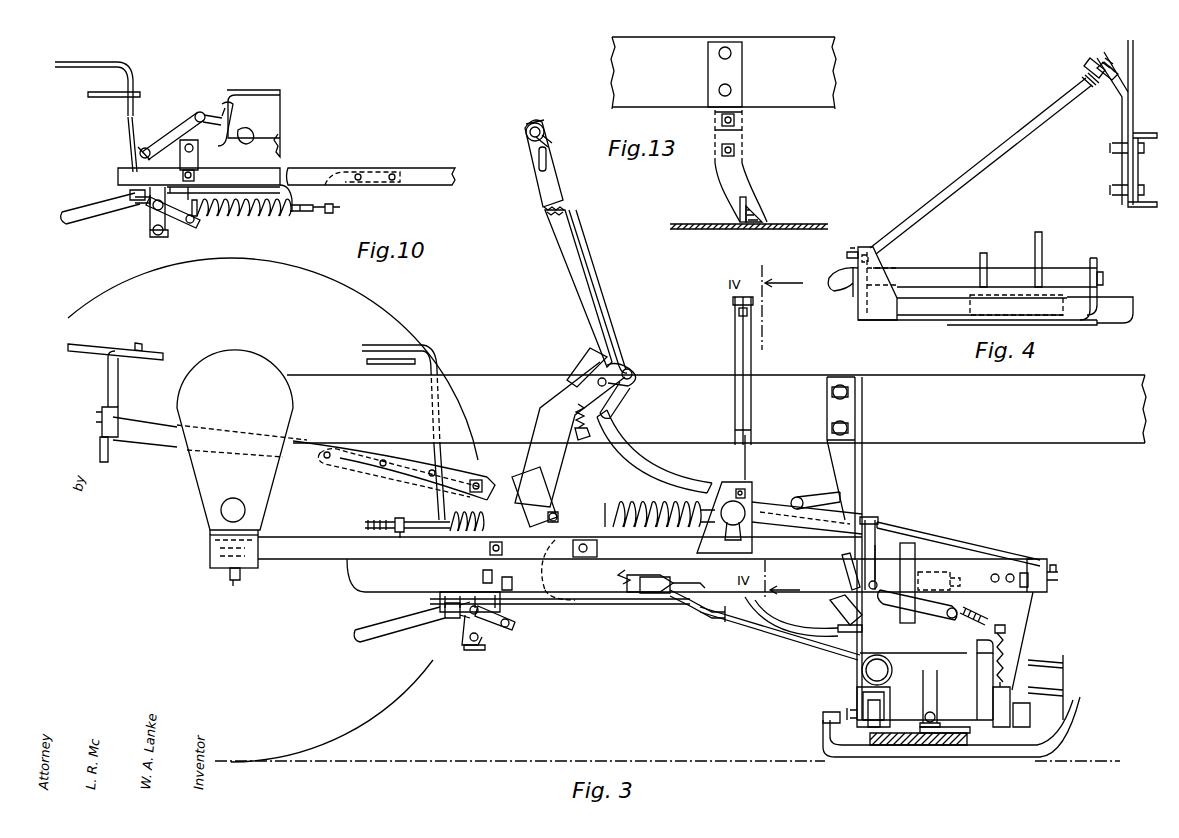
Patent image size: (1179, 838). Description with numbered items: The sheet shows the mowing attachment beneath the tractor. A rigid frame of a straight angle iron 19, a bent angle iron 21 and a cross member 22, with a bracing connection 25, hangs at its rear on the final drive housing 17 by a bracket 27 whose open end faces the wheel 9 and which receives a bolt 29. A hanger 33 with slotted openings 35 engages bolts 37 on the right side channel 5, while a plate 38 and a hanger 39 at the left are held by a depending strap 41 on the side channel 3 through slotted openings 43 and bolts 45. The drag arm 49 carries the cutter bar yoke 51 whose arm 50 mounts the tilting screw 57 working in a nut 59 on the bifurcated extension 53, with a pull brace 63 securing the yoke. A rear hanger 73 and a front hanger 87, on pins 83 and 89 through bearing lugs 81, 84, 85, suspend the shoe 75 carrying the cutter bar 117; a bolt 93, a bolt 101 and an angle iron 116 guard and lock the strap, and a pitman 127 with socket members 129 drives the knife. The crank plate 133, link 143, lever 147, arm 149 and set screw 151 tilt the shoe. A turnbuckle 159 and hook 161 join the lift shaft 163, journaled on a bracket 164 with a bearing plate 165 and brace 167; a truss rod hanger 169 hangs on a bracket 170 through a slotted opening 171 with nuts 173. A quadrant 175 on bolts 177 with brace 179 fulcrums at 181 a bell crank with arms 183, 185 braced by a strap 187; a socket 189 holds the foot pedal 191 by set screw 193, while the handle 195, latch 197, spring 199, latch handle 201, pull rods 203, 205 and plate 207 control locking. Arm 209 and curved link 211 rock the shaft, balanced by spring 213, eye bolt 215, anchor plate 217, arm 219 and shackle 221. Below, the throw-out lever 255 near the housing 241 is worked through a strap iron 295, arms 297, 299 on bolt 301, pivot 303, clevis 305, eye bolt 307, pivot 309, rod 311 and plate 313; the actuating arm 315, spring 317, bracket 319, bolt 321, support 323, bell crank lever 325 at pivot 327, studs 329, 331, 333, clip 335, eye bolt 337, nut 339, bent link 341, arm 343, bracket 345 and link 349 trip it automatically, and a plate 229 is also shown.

In FIG. 13, the side channel 3 is at (826, 106).
In FIG. 4, the right side channel 5 is at (1144, 140).
In FIG. 3, the right side channel 5 is at (985, 443).
In FIG. 3, the wheel 9 is at (415, 680).
In FIG. 3, the final drive housing 17 is at (262, 477).
In FIG. 4, the angle iron 19 is at (1133, 312).
In FIG. 3, the angle iron 19 is at (330, 559).
In FIG. 3, the bent angle iron 21 is at (1058, 576).
In FIG. 13, the angle iron cross member 22 is at (738, 210).
In FIG. 3, the bracing connection 25 is at (960, 538).
In FIG. 3, the bracket 27 is at (210, 546).
In FIG. 3, the bolt 29 is at (235, 586).
In FIG. 3, the hanger 33 is at (862, 470).
In FIG. 3, the slotted openings 35 is at (830, 426).
In FIG. 3, the bolts 37 is at (850, 428).
In FIG. 13, the plate 38 is at (803, 223).
In FIG. 13, the hanger 39 is at (757, 186).
In FIG. 13, the depending strap 41 is at (742, 68).
In FIG. 13, the slotted openings 43 is at (735, 151).
In FIG. 13, the bolts 45 is at (722, 152).
In FIG. 3, the drag arm 49 is at (775, 625).
In FIG. 3, the upwardly extending arm 50 is at (875, 580).
In FIG. 3, the cutter bar yoke 51 is at (985, 660).
In FIG. 3, the bifurcated extension 53 is at (962, 605).
In FIG. 3, the tilting screw 57 is at (845, 556).
In FIG. 3, the tilting screw nut 59 is at (950, 592).
In FIG. 3, the pull brace 63 is at (1026, 622).
In FIG. 3, the rear hanger 73 is at (892, 675).
In FIG. 3, the cutter bar shoe 75 is at (1078, 700).
In FIG. 3, the bearing lug 81 is at (870, 740).
In FIG. 3, the pin 83 is at (885, 708).
In FIG. 3, the bearing lug 84 is at (1040, 743).
In FIG. 3, the bearing lug 85 is at (990, 727).
In FIG. 3, the front hanger 87 is at (1003, 727).
In FIG. 3, the pin 89 is at (1030, 712).
In FIG. 3, the bolt 93 is at (1033, 663).
In FIG. 3, the bolt 101 is at (1000, 625).
In FIG. 3, the angle iron 116 is at (1033, 690).
In FIG. 3, the cutter bar 117 is at (915, 745).
In FIG. 3, the pitman 127 is at (938, 690).
In FIG. 3, the socket members 129 is at (940, 712).
In FIG. 3, the crank plate 133 is at (846, 616).
In FIG. 3, the link 143 is at (838, 630).
In FIG. 3, the lever 147 is at (857, 690).
In FIG. 3, the arm 149 is at (823, 716).
In FIG. 3, the set screw 151 is at (848, 712).
In FIG. 3, the turnbuckle connection 159 is at (878, 545).
In FIG. 3, the hook 161 is at (873, 518).
In FIG. 4, the lift shaft 163 is at (950, 268).
In FIG. 3, the lift shaft 163 is at (795, 530).
In FIG. 4, the bracket 164 is at (917, 316).
In FIG. 4, the bearing plate 165 is at (887, 263).
In FIG. 3, the bearing plate 165 is at (722, 482).
In FIG. 3, the horizontal brace 167 is at (615, 582).
In FIG. 4, the truss rod hanger 169 is at (1000, 160).
In FIG. 3, the truss rod hanger 169 is at (740, 449).
In FIG. 4, the bracket 170 is at (1122, 128).
In FIG. 3, the bracket 170 is at (734, 347).
In FIG. 4, the slotted opening 171 is at (1104, 84).
In FIG. 3, the slotted opening 171 is at (748, 312).
In FIG. 4, the nuts 173 is at (1086, 66).
In FIG. 3, the quadrant 175 is at (492, 470).
In FIG. 3, the bolts 177 is at (600, 560).
In FIG. 3, the brace 179 is at (540, 548).
In FIG. 3, the fulcrum 181 is at (545, 500).
In FIG. 3, the rearwardly extending arm 183 is at (150, 425).
In FIG. 3, the upwardly extending arm 185 is at (562, 272).
In FIG. 3, the strap 187 is at (556, 410).
In FIG. 3, the socket 189 is at (100, 440).
In FIG. 3, the foot pedal 191 is at (140, 352).
In FIG. 3, the set screw 193 is at (96, 425).
In FIG. 3, the handle 195 is at (540, 122).
In FIG. 3, the latch 197 is at (617, 506).
In FIG. 3, the tension spring 199 is at (572, 405).
In FIG. 3, the latch handle 201 is at (552, 152).
In FIG. 3, the pull rod 203 is at (605, 300).
In FIG. 3, the pull rod 205 is at (628, 403).
In FIG. 3, the plate 207 is at (637, 380).
In FIG. 4, the arm 209 is at (1042, 240).
In FIG. 3, the arm 209 is at (744, 489).
In FIG. 3, the curved link 211 is at (655, 478).
In FIG. 3, the balancing spring 213 is at (478, 533).
In FIG. 3, the adjustable eye bolt 215 is at (378, 521).
In FIG. 3, the anchor plate 217 is at (420, 516).
In FIG. 4, the arm 219 is at (987, 262).
In FIG. 3, the arm 219 is at (812, 492).
In FIG. 3, the shackle 221 is at (795, 498).
In FIG. 3, the plate 229 is at (915, 548).
In FIG. 10, the power take-off housing 241 is at (280, 98).
In FIG. 3, the power take-off housing 241 is at (545, 604).
In FIG. 10, the throw-out lever 255 is at (226, 102).
In FIG. 10, the strap iron 295 is at (440, 162).
In FIG. 10, the long arm 297 is at (70, 222).
In FIG. 3, the long arm 297 is at (375, 634).
In FIG. 10, the short arm 299 is at (118, 170).
In FIG. 10, the bolt 301 is at (196, 176).
In FIG. 3, the bolt 301 is at (512, 582).
In FIG. 10, the pivot 303 is at (138, 153).
In FIG. 10, the clevis 305 is at (176, 134).
In FIG. 10, the eye bolt 307 is at (196, 113).
In FIG. 10, the pivot 309 is at (200, 110).
In FIG. 10, the vertically movable rod 311 is at (128, 126).
In FIG. 3, the vertically movable rod 311 is at (433, 397).
In FIG. 10, the plate 313 is at (108, 96).
In FIG. 3, the plate 313 is at (395, 355).
In FIG. 10, the actuating lever 315 is at (249, 144).
In FIG. 10, the tension spring 317 is at (272, 218).
In FIG. 10, the bracket 319 is at (320, 203).
In FIG. 10, the adjustable bolt 321 is at (340, 209).
In FIG. 10, the support 323 is at (150, 232).
In FIG. 3, the support 323 is at (466, 645).
In FIG. 10, the bell crank lever 325 is at (190, 228).
In FIG. 3, the bell crank lever 325 is at (512, 630).
In FIG. 10, the pivot 327 is at (156, 238).
In FIG. 3, the pivot 327 is at (480, 647).
In FIG. 10, the stud 329 is at (196, 222).
In FIG. 3, the stud 329 is at (509, 625).
In FIG. 10, the stud 331 is at (193, 149).
In FIG. 10, the stud 333 is at (150, 210).
In FIG. 3, the stud 333 is at (465, 615).
In FIG. 10, the clip 335 is at (130, 193).
In FIG. 10, the eye bolt 337 is at (192, 191).
In FIG. 10, the nut 339 is at (133, 200).
In FIG. 10, the bent link 341 is at (285, 186).
In FIG. 3, the bent link 341 is at (600, 604).
In FIG. 3, the arm 343 is at (726, 606).
In FIG. 3, the bracket 345 is at (680, 582).
In FIG. 3, the link 349 is at (768, 646).